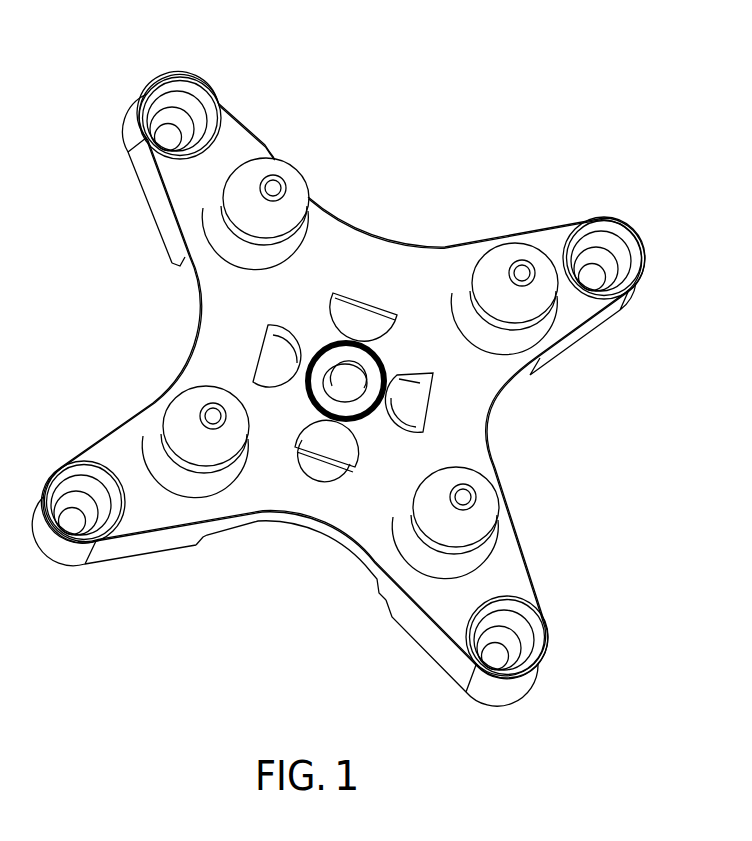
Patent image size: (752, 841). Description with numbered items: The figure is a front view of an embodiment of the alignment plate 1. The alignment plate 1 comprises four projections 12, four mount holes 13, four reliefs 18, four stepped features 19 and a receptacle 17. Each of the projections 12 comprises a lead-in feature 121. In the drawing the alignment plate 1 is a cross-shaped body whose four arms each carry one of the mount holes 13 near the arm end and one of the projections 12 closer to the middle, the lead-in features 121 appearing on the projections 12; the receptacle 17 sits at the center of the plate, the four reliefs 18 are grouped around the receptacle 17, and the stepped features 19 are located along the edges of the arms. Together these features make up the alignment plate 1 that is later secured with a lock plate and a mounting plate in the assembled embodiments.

The alignment plate 1 is at (380, 600).
The projections 12 is at (513, 250).
The lead-in features 121 is at (327, 141).
The mount holes 13 is at (223, 86).
The receptacle 17 is at (365, 391).
The reliefs 18 is at (420, 410).
The stepped features 19 is at (462, 653).